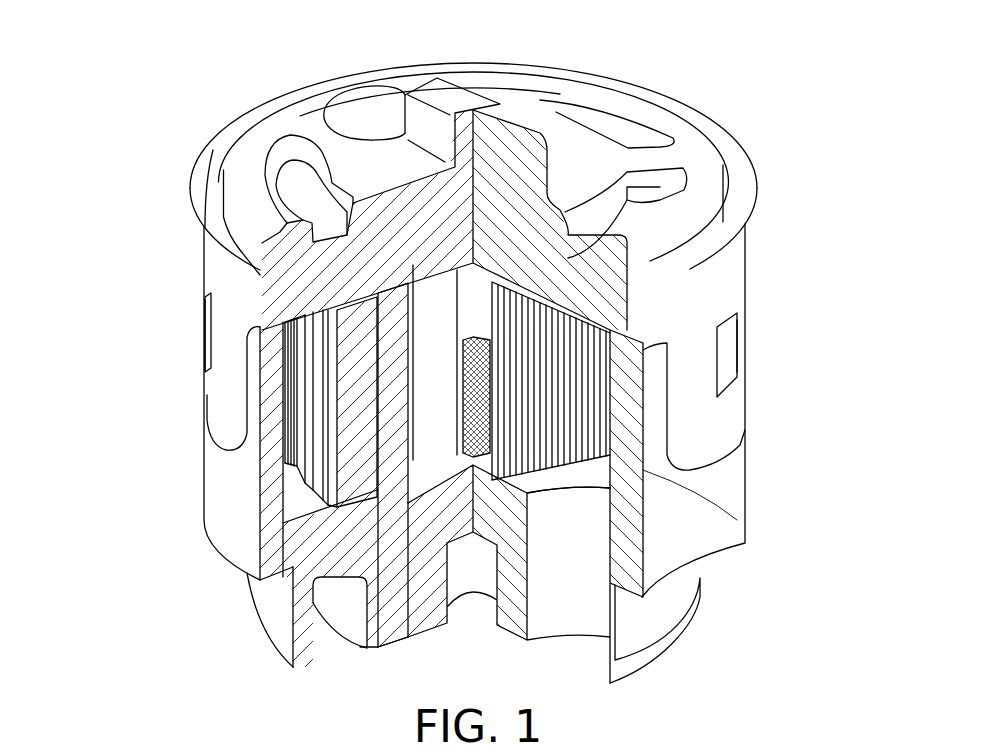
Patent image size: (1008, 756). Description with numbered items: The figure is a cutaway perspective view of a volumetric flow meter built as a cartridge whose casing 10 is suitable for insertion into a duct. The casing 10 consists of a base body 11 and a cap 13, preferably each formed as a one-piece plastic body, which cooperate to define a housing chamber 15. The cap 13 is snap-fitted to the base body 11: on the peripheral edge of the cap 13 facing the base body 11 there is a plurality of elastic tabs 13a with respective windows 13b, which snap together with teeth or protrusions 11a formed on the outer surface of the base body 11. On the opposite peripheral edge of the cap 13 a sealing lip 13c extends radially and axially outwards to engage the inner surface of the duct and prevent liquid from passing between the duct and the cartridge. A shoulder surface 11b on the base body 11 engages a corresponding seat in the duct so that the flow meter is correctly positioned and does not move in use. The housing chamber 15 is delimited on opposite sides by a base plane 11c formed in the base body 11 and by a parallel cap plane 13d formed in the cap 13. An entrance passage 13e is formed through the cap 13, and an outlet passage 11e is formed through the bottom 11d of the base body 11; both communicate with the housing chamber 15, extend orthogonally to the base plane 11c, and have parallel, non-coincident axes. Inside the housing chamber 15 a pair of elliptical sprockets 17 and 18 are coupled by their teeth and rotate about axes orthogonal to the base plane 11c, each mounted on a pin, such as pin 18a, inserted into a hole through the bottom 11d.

The casing 10 is at (160, 468).
The base body 11 is at (750, 555).
The teeth or protrusions 11a is at (204, 318).
The shoulder surface 11b is at (712, 578).
The base plane 11c is at (290, 480).
The bottom 11d is at (427, 593).
The outlet passage 11e is at (577, 595).
The cap 13 is at (754, 226).
The elastic tabs 13a is at (220, 405).
The windows 13b is at (205, 340).
The sealing lip 13c is at (743, 160).
The cap plane 13d is at (510, 280).
The entrance passage 13e is at (344, 115).
The housing chamber 15 is at (300, 343).
The elliptical sprocket 17 is at (660, 497).
The elliptical sprocket 18 is at (300, 455).
The pin 18a is at (397, 620).